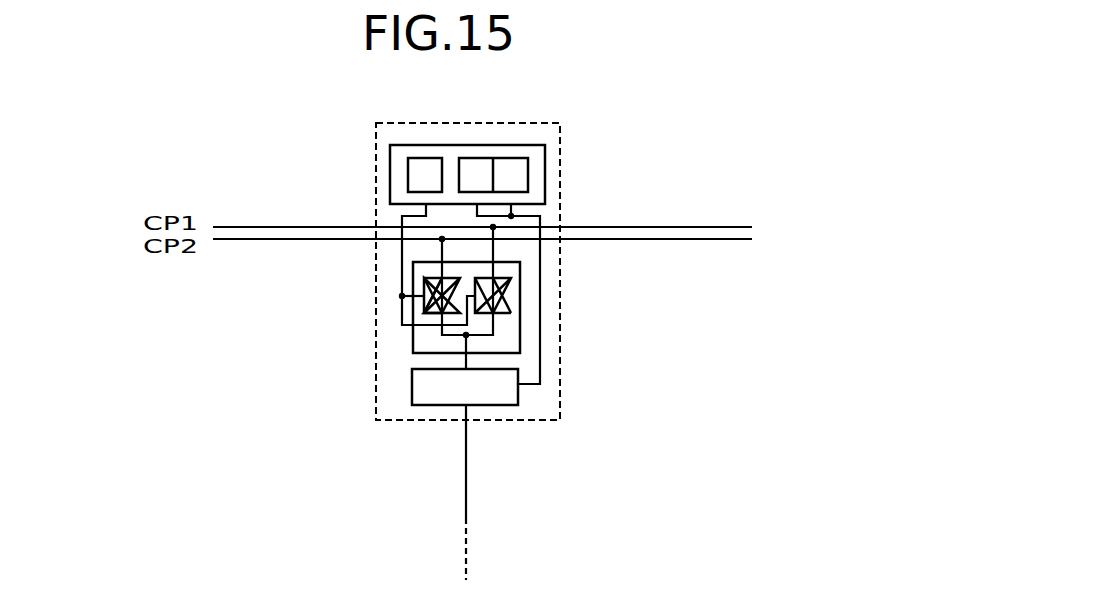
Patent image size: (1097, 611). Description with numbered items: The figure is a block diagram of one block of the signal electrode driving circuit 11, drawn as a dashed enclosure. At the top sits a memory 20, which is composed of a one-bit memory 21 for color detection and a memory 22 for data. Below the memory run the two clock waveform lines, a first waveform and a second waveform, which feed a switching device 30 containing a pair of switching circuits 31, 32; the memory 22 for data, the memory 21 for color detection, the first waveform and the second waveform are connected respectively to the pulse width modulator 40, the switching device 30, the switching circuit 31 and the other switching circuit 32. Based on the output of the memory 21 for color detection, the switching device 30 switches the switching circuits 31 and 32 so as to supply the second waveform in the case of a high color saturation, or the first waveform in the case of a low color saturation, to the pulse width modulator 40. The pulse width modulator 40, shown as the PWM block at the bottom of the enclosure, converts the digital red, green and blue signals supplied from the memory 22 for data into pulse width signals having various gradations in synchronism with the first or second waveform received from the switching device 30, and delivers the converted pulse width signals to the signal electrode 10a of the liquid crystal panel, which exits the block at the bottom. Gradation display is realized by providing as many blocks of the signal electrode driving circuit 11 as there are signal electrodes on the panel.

The signal electrode driving circuit 11 is at (376, 274).
The memory 20 is at (517, 145).
The memory for color detection 21 is at (410, 172).
The memory for data 22 is at (545, 172).
The switching device 30 is at (520, 276).
The switching circuit 31 is at (511, 305).
The switching circuit 32 is at (426, 307).
The pulse width modulator 40 is at (518, 393).
The signal electrode 10a is at (466, 465).